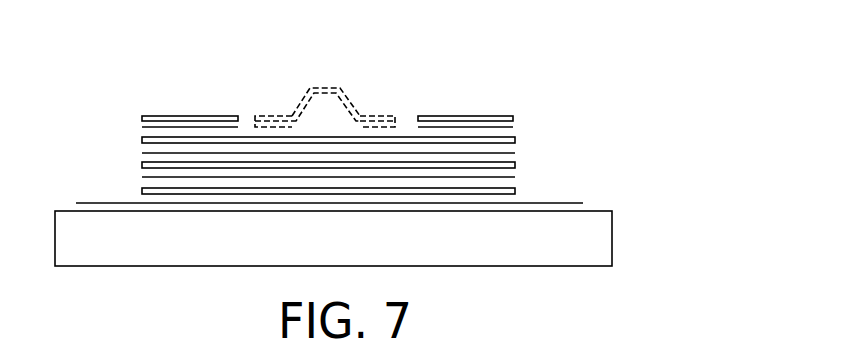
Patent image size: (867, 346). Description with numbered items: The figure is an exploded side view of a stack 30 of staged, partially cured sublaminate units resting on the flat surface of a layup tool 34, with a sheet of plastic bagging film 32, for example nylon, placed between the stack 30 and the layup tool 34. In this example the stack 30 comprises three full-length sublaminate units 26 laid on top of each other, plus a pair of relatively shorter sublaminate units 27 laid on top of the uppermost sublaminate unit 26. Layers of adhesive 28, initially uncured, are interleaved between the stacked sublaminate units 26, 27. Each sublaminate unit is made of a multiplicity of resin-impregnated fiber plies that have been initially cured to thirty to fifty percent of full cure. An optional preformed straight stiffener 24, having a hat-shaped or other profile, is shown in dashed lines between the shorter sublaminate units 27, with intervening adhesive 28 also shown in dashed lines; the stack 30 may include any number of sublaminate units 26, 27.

The stiffener 24 is at (330, 87).
The sublaminate unit 26 is at (515, 138).
The sublaminate unit 27 is at (480, 116).
The adhesive 28 is at (142, 128).
The stack 30 is at (576, 90).
The plastic bagging film 32 is at (583, 203).
The layup tool 34 is at (613, 250).